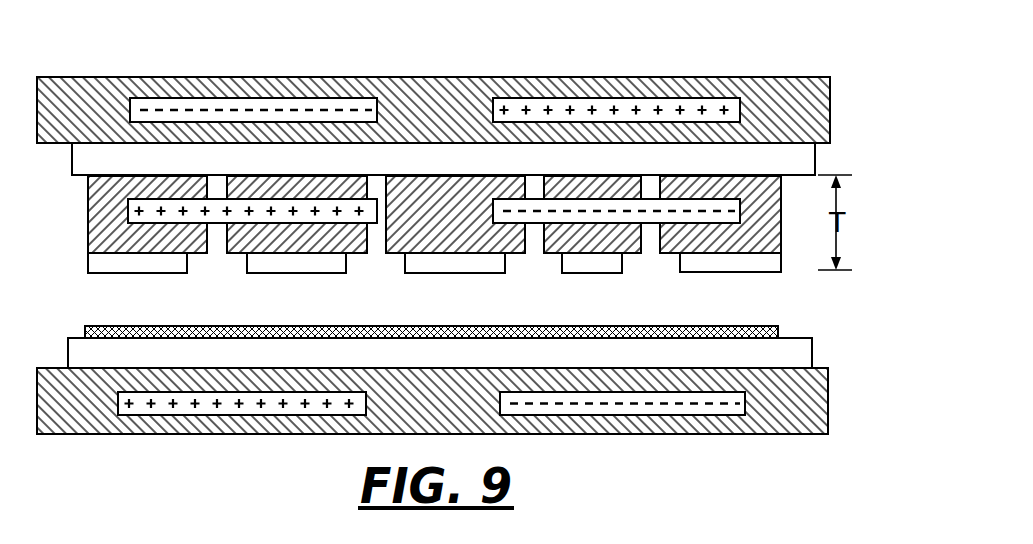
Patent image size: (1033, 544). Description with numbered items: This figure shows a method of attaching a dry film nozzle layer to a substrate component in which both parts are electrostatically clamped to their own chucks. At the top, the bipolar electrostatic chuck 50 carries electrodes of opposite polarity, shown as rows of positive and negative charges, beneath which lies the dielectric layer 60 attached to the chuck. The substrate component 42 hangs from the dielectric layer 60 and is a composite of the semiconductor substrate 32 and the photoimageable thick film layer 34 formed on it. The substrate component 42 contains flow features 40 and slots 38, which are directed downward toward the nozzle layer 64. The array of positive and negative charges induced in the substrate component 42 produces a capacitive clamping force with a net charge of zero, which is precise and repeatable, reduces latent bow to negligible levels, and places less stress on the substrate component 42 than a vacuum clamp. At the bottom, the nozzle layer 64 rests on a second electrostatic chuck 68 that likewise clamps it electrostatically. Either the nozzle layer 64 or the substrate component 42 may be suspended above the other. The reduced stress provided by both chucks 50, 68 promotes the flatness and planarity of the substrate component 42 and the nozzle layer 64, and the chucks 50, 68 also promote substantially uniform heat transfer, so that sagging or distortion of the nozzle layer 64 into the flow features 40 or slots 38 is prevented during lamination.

The electrostatic chuck 50 is at (801, 58).
The dielectric layer 60 is at (466, 170).
The substrate component 42 is at (400, 245).
The substrate 32 is at (462, 229).
The flow features 40 is at (530, 267).
The slots 38 is at (651, 262).
The thick film layer 34 is at (736, 262).
The nozzle layer 64 is at (403, 326).
The electrostatic chuck 68 is at (783, 458).